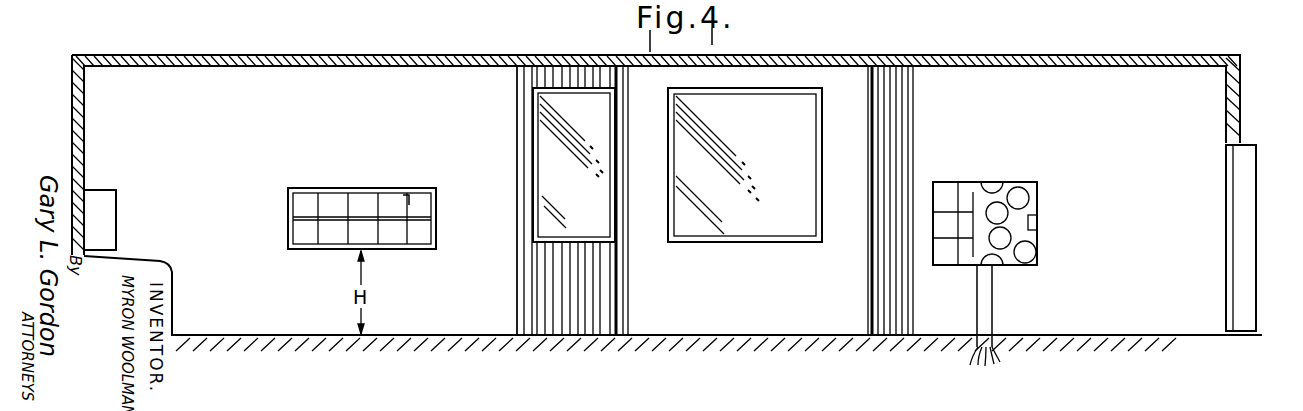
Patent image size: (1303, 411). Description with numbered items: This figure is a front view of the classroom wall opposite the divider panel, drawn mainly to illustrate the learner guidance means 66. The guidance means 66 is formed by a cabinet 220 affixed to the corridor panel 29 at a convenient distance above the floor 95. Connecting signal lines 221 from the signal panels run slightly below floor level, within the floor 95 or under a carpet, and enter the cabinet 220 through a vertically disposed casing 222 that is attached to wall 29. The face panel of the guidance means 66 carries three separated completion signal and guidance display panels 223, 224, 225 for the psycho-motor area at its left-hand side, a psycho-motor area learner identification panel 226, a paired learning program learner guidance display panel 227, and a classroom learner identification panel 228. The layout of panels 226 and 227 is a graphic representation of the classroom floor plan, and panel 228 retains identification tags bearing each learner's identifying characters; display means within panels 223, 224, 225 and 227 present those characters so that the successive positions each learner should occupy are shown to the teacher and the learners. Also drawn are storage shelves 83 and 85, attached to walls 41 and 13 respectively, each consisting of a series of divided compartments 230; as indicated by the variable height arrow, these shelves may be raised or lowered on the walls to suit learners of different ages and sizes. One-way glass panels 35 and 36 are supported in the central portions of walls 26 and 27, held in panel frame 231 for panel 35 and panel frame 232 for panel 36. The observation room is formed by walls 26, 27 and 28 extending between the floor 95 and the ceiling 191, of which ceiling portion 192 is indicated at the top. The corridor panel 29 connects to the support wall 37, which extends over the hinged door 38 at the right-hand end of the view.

The wall 13 is at (293, 132).
The wall 26 is at (573, 338).
The wall 27 is at (768, 307).
The wall 28 is at (892, 72).
The corridor panel 29 is at (1173, 92).
The one-way glass panel 35 is at (584, 208).
The one-way glass panel 36 is at (762, 134).
The support wall 37 is at (1236, 82).
The hinged door 38 is at (1248, 165).
The wall 41 is at (72, 115).
The learner guidance means 66 is at (1044, 226).
The storage shelf 83 is at (105, 196).
The storage shelf 85 is at (345, 189).
The floor 95 is at (468, 340).
The ceiling 191 is at (363, 56).
The ceiling portion 192 is at (170, 27).
The cabinet 220 is at (1037, 253).
The signal lines 221 is at (984, 362).
The casing 222 is at (992, 303).
The completion signal and guidance display panel 223 is at (943, 183).
The completion signal and guidance display panel 224 is at (937, 228).
The completion signal and guidance display panel 225 is at (948, 256).
The psycho-motor area learner identification panel 226 is at (966, 182).
The paired learning program learner guidance display panel 227 is at (1002, 184).
The classroom learner identification panel 228 is at (1035, 218).
The divided compartments 230 is at (408, 200).
The panel frame 231 is at (531, 219).
The panel frame 232 is at (704, 243).